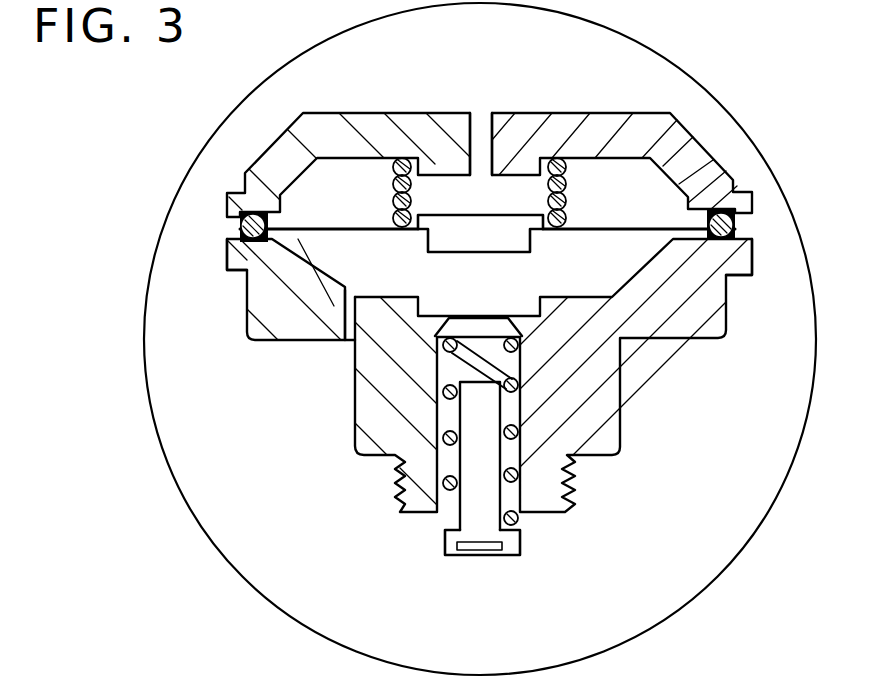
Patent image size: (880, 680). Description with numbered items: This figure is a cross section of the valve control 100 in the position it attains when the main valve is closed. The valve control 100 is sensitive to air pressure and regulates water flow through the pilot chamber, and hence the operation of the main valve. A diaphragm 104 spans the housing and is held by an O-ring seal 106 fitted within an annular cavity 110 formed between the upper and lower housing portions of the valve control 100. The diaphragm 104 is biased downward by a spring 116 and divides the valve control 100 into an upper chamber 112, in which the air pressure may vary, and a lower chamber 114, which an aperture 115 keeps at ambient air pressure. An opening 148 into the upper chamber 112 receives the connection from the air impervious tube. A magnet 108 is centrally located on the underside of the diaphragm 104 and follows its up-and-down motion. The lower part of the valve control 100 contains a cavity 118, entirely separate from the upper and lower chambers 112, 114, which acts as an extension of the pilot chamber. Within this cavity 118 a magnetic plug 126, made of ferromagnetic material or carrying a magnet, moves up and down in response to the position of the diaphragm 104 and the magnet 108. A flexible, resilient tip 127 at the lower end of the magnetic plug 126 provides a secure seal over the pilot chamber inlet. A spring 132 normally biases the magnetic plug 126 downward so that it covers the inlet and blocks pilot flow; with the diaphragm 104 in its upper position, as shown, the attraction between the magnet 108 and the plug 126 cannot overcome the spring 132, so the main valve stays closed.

The valve control 100 is at (374, 104).
The diaphragm 104 is at (350, 218).
The O-ring seal 106 is at (227, 270).
The magnet 108 is at (481, 264).
The annular cavity 110 is at (240, 226).
The upper chamber 112 is at (330, 213).
The lower chamber 114 is at (578, 267).
The aperture 115 is at (350, 340).
The spring 116 is at (574, 198).
The cavity 118 is at (450, 502).
The magnetic plug 126 is at (436, 558).
The flexible, resilient tip 127 is at (496, 564).
The spring 132 is at (530, 522).
The opening 148 is at (480, 150).